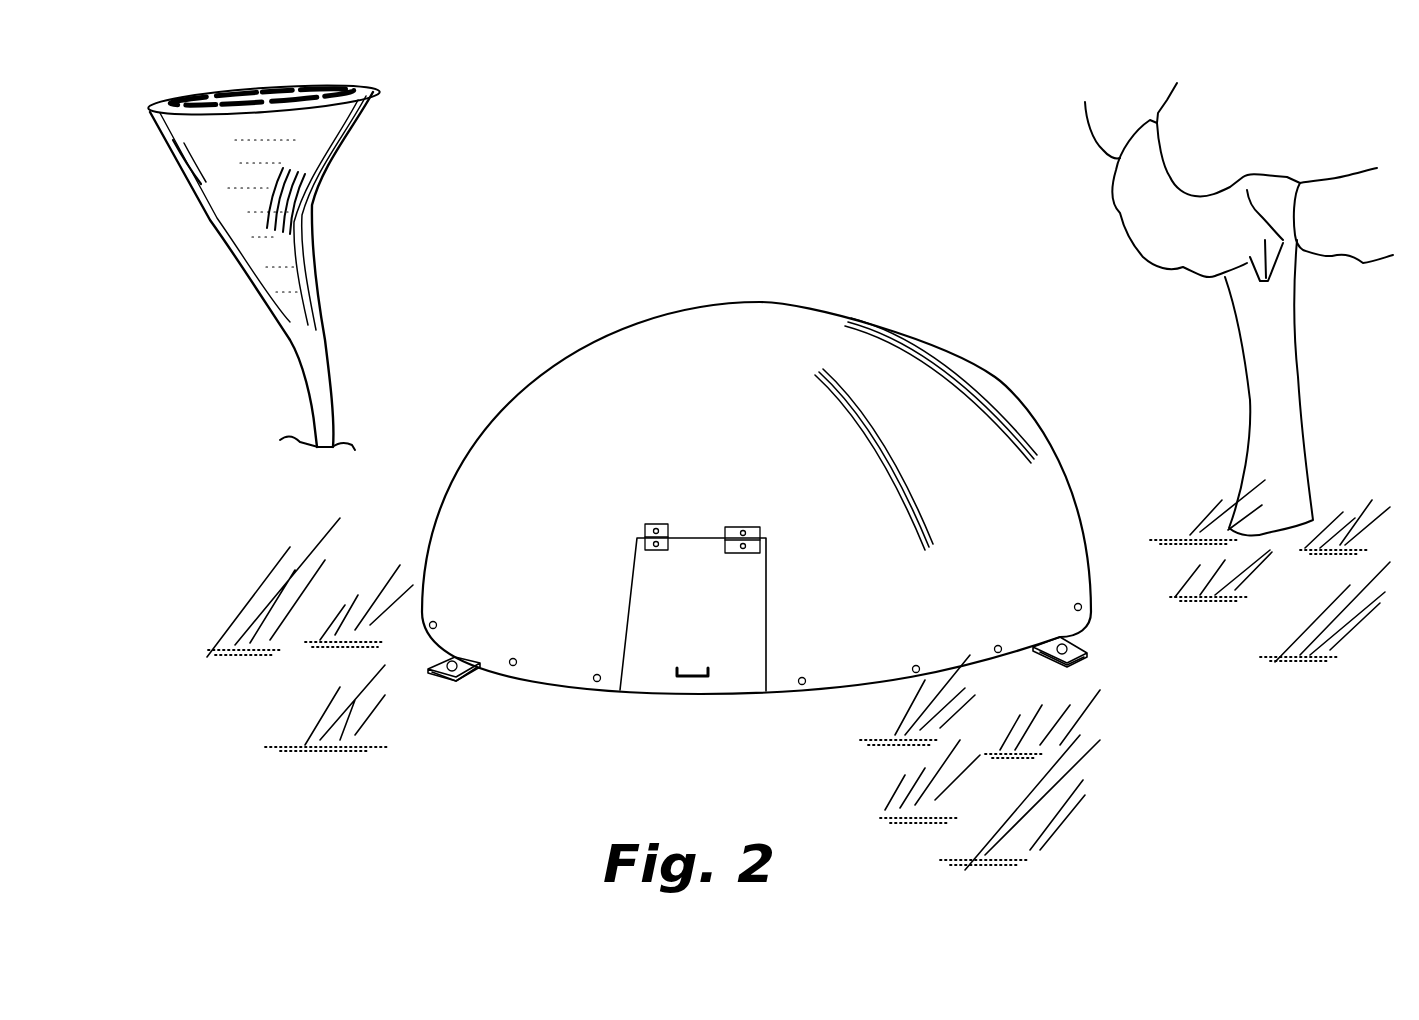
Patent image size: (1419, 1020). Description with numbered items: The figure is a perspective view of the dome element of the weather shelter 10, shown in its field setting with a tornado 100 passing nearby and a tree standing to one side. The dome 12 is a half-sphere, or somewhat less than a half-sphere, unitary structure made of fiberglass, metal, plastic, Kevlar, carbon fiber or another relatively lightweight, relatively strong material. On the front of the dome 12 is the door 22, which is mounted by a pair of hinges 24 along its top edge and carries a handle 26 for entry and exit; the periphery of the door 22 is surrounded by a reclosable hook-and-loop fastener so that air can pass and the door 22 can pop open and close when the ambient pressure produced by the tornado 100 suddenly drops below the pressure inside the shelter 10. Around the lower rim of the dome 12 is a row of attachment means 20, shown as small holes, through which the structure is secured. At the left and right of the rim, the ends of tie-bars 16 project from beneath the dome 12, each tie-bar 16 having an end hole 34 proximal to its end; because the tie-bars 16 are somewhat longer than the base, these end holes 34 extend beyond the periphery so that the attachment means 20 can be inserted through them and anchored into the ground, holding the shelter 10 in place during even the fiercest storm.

The weather shelter 10 is at (960, 277).
The dome 12 is at (628, 355).
The tie-bar 16 is at (430, 676).
The attachment means 20 is at (998, 646).
The door 22 is at (742, 602).
The hinges 24 is at (740, 530).
The handle 26 is at (687, 673).
The end hole 34 is at (455, 676).
The tornado 100 is at (322, 182).